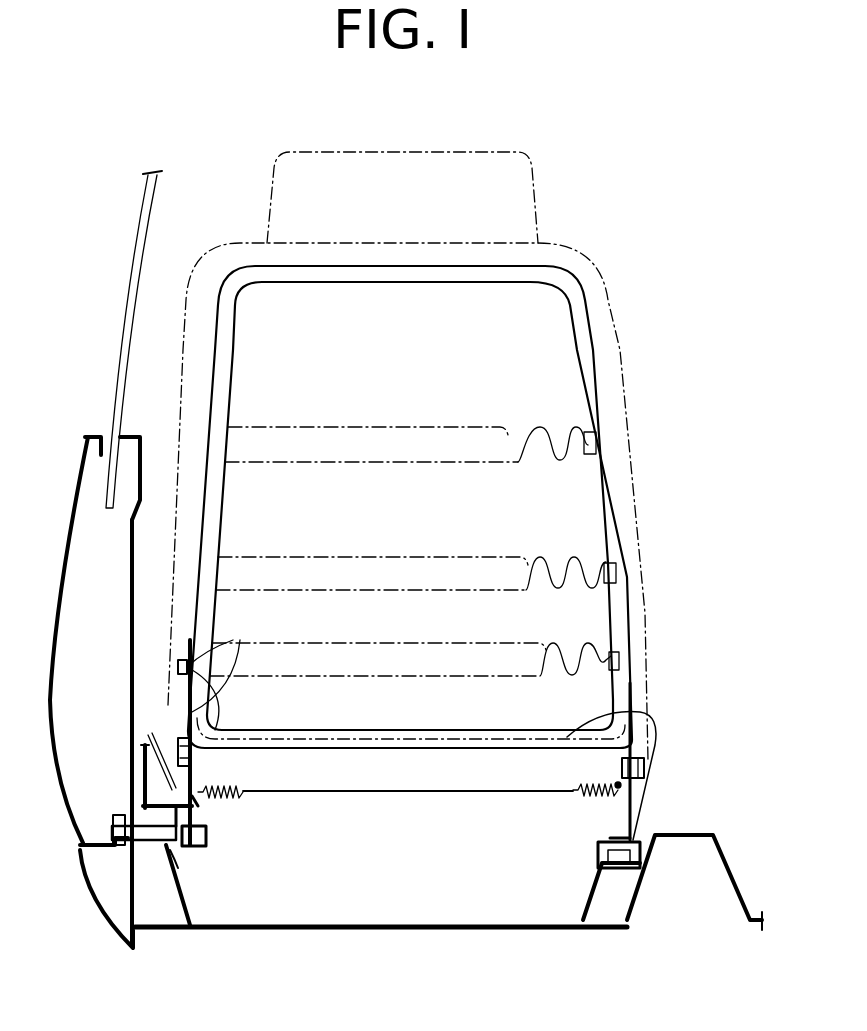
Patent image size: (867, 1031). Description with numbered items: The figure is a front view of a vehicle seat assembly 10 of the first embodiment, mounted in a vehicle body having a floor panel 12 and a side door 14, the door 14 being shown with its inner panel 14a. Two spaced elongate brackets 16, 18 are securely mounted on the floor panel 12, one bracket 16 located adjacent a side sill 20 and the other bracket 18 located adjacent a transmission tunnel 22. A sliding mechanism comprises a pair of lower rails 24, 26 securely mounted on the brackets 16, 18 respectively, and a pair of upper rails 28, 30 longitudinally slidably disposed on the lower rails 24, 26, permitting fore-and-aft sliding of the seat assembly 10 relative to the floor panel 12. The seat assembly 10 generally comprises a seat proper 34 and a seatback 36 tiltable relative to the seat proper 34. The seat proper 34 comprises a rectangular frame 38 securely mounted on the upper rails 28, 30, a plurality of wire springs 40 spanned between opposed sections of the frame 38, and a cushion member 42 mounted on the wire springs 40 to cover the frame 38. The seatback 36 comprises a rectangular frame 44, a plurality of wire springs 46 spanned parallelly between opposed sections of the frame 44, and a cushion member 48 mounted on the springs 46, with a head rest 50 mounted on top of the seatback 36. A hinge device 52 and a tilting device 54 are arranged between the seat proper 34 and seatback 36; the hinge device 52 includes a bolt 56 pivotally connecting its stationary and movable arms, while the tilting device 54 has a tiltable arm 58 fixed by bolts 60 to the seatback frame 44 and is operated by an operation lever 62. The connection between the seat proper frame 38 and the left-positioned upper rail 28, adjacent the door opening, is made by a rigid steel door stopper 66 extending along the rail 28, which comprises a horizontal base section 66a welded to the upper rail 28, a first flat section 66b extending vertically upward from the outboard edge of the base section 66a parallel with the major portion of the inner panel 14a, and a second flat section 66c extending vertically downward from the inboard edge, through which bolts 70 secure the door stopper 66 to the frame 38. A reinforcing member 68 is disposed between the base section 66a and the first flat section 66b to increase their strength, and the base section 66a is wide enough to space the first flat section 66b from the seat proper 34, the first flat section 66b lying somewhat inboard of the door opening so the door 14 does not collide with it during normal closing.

The vehicle seat assembly 10 is at (533, 168).
The floor panel 12 is at (388, 932).
The side door 14 is at (78, 466).
The inner panel 14a is at (128, 548).
The bracket 16 is at (180, 900).
The bracket 18 is at (590, 883).
The side sill 20 is at (96, 910).
The transmission tunnel 22 is at (735, 872).
The lower rail 24 is at (172, 852).
The lower rail 26 is at (624, 868).
The upper rail 28 is at (135, 812).
The upper rail 30 is at (640, 842).
The seat proper 34 is at (660, 722).
The seatback 36 is at (630, 404).
The rectangular frame 38 is at (200, 840).
The wire springs 40 is at (398, 793).
The cushion member 42 is at (650, 702).
The rectangular frame 44 is at (605, 480).
The wire springs 46 is at (532, 425).
The cushion member 48 is at (625, 345).
The head rest 50 is at (385, 150).
The hinge device 52 is at (640, 745).
The tilting device 54 is at (180, 758).
The bolt 56 is at (648, 770).
The tiltable arm 58 is at (180, 664).
The bolts 60 is at (219, 672).
The operation lever 62 is at (190, 752).
The door stopper 66 is at (141, 748).
The horizontal base section 66a is at (195, 802).
The first flat section 66b is at (145, 748).
The second flat section 66c is at (198, 826).
The reinforcing member 68 is at (148, 775).
The bolts 70 is at (178, 860).